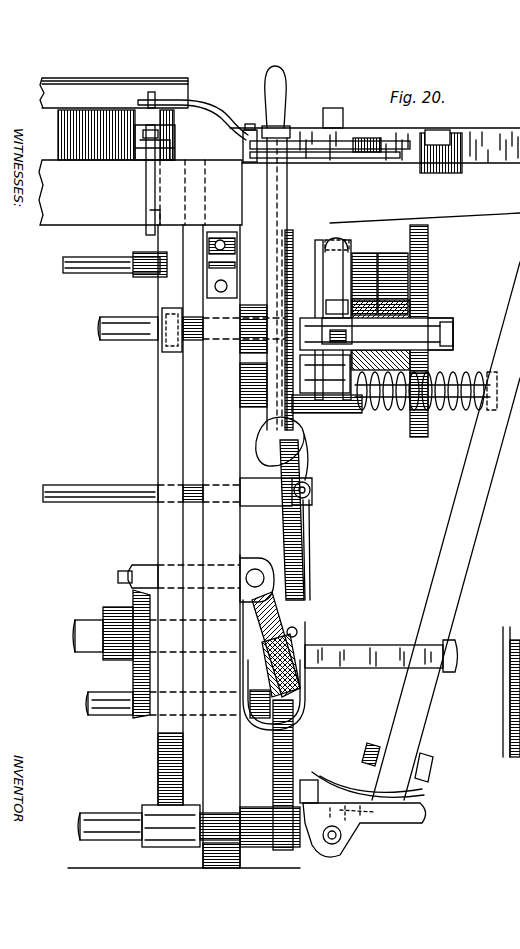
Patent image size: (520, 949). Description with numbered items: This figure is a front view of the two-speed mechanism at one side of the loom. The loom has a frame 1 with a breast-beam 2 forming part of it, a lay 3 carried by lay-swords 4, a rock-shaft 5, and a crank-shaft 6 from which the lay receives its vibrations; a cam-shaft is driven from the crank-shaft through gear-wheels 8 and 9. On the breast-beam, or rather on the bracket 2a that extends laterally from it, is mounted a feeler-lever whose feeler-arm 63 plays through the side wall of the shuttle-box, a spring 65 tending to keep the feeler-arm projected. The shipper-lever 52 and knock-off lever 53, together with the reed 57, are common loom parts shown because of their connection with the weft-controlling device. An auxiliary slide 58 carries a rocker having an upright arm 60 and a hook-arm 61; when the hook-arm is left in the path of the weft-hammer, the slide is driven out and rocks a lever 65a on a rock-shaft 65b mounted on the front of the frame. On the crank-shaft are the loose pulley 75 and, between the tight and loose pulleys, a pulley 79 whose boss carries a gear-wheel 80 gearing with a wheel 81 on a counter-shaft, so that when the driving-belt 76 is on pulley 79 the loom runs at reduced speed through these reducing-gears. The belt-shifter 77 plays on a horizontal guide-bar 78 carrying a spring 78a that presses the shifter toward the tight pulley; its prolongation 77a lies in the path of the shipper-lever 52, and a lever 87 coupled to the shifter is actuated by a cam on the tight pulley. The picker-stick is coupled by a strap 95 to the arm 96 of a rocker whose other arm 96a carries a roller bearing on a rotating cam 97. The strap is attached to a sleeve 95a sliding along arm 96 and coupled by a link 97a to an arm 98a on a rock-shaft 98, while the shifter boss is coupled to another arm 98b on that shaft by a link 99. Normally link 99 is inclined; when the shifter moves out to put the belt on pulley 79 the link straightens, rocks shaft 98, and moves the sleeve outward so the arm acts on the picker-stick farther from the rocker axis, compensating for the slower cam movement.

The frame 1 is at (235, 514).
The breast-beam 2 is at (140, 151).
The bracket 2a is at (386, 172).
The lay 3 is at (495, 185).
The lay-swords 4 is at (158, 417).
The rock-shaft 5 is at (117, 813).
The crank-shaft 6 is at (126, 316).
The gear-wheel 8 is at (284, 263).
The gear-wheel 9 is at (296, 764).
The shipper-lever 52 is at (270, 92).
The knock-off lever 53 is at (366, 160).
The reed 57 is at (58, 135).
The auxiliary slide 58 is at (135, 155).
The upright arm 60 is at (155, 95).
The hook-arm 61 is at (145, 180).
The feeler-arm 63 is at (306, 140).
The spring 65 is at (245, 135).
The lever 65a is at (157, 218).
The rock-shaft 65b is at (100, 258).
The loose pulley 75 is at (392, 256).
The driving-belt 76 is at (332, 108).
The belt-shifter 77 is at (322, 265).
The prolongation 77a is at (322, 413).
The guide-bar 78 is at (440, 412).
The spring 78a is at (468, 378).
The pulley 79 is at (365, 256).
The gear-wheel 80 is at (390, 330).
The wheel 81 is at (428, 265).
The lever 87 is at (318, 340).
The strap 95 is at (380, 646).
The sleeve 95a is at (300, 668).
The arm 96 is at (240, 634).
The arm 96a is at (198, 558).
The cam 97 is at (140, 720).
The link 97a is at (306, 566).
The rock-shaft 98 is at (115, 486).
The arm 98a is at (312, 492).
The arm 98b is at (312, 482).
The link 99 is at (305, 450).